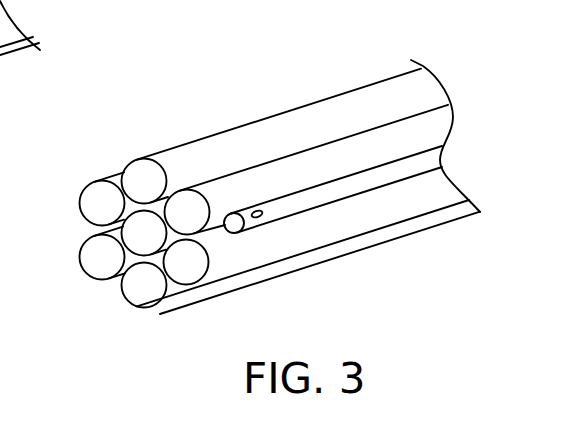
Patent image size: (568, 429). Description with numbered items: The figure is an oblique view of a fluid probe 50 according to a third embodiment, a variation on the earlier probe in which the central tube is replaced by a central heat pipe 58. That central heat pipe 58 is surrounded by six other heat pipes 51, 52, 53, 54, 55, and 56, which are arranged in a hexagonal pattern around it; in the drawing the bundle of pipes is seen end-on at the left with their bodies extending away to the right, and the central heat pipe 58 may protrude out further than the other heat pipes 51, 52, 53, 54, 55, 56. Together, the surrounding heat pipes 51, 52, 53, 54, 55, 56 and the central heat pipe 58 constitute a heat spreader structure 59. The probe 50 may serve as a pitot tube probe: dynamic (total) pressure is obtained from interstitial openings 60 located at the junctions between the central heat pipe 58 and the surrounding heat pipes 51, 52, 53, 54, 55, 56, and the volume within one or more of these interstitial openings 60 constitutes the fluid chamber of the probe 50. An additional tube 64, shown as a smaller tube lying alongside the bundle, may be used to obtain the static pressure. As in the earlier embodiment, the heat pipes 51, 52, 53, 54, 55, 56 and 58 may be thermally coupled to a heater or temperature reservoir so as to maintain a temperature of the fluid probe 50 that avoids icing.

The fluid probe 50 is at (210, 82).
The heat pipe 51 is at (143, 177).
The heat pipe 52 is at (359, 153).
The heat pipe 53 is at (298, 233).
The heat pipe 54 is at (177, 292).
The heat pipe 55 is at (102, 260).
The heat pipe 56 is at (96, 202).
The central heat pipe 58 is at (150, 243).
The heat spreader structure 59 is at (273, 102).
The interstitial openings 60 is at (130, 265).
The additional tube 64 is at (307, 198).